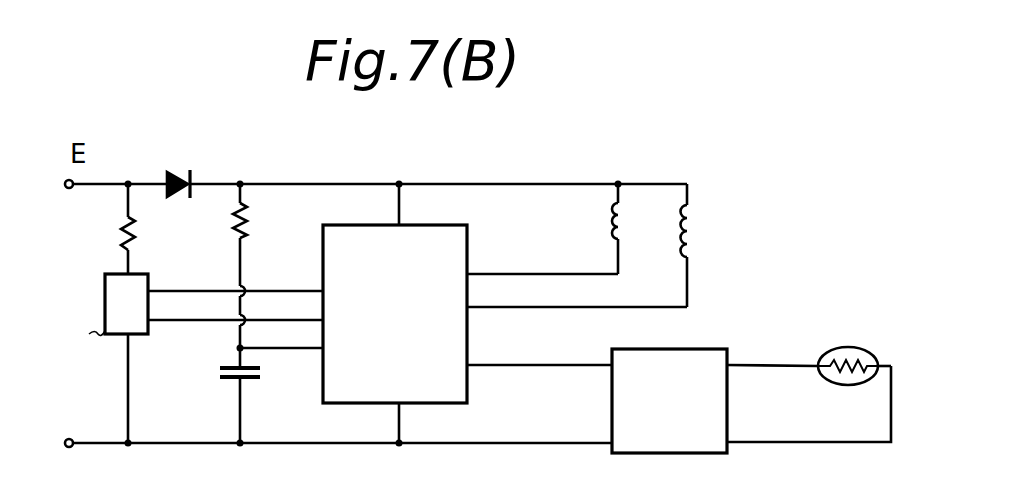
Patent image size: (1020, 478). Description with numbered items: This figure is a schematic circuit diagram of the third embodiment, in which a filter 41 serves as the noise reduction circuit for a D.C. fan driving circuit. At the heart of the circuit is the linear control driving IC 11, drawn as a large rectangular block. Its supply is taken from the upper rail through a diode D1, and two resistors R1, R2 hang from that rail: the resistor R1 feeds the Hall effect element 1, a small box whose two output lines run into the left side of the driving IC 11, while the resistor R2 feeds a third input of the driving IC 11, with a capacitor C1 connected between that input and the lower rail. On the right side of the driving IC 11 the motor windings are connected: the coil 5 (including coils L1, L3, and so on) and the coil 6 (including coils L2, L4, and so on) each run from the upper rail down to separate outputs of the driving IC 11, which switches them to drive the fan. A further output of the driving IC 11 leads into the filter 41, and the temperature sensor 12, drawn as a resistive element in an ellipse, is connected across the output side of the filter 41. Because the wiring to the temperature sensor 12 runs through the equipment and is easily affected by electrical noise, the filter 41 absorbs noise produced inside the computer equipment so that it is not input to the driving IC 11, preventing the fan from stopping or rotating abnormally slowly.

The Hall effect element 1 is at (155, 257).
The coil 5 is at (622, 230).
The coil 6 is at (692, 235).
The linear control driving IC 11 is at (467, 242).
The temperature sensor 12 is at (840, 348).
The filter 41 is at (710, 349).
The diode D1 is at (179, 170).
The resistor R1 is at (108, 233).
The resistor R2 is at (221, 276).
The capacitor C1 is at (216, 378).